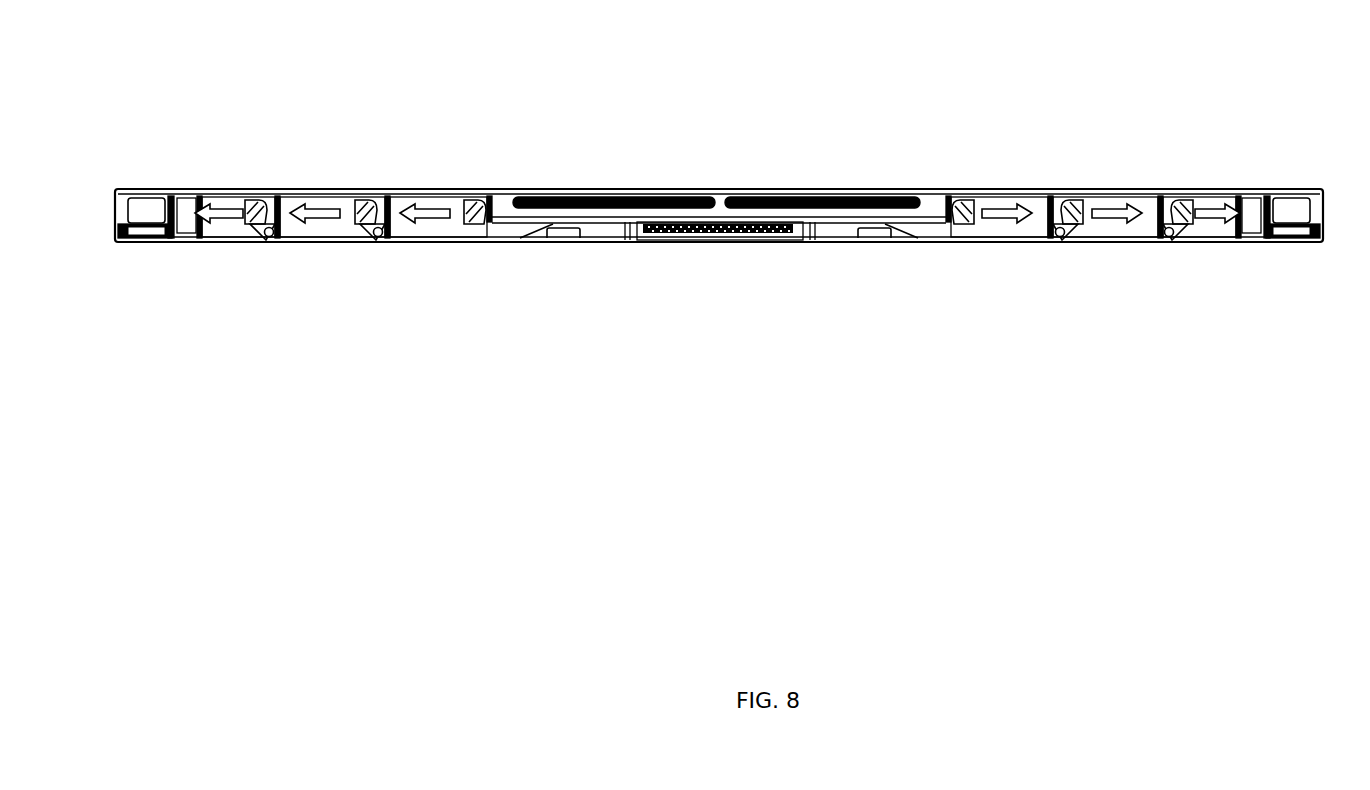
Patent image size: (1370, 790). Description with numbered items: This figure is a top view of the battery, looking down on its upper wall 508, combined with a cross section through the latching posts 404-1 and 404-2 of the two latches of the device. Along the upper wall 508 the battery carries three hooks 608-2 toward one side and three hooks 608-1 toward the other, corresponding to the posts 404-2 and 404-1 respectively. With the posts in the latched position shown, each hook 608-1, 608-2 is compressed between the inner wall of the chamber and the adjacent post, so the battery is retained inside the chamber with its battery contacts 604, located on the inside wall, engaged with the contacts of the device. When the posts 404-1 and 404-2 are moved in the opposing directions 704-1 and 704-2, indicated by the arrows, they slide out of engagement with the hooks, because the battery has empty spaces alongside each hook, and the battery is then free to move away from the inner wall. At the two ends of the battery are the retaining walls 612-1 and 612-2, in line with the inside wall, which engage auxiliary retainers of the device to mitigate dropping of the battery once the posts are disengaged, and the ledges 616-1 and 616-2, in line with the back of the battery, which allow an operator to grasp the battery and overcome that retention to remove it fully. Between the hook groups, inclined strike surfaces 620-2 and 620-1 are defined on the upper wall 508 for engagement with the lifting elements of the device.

The post 404-1 is at (980, 188).
The post 404-2 is at (463, 188).
The upper wall 508 is at (937, 188).
The battery contacts 604 is at (710, 242).
The hook 608-1 is at (962, 241).
The hook 608-2 is at (482, 241).
The retaining wall 612-1 is at (1290, 242).
The retaining wall 612-2 is at (143, 242).
The ledge 616-1 is at (1293, 188).
The ledge 616-2 is at (145, 188).
The inclined strike surface 620-1 is at (873, 242).
The inclined strike surface 620-2 is at (560, 242).
The direction 704-1 is at (1227, 242).
The direction 704-2 is at (227, 242).